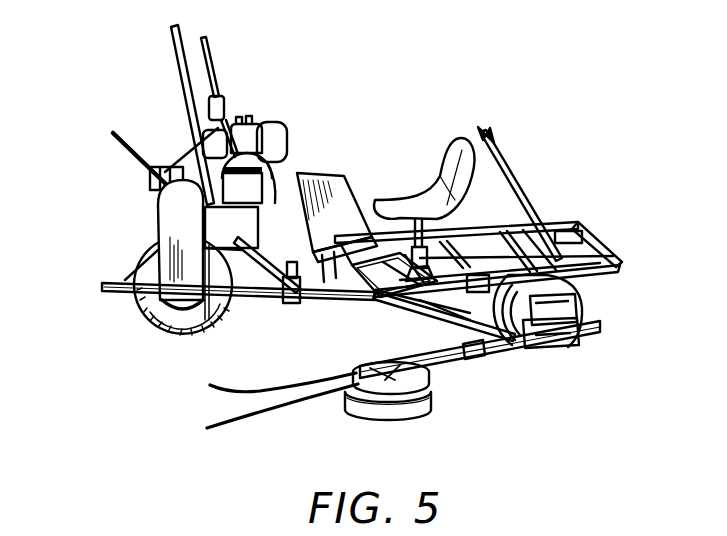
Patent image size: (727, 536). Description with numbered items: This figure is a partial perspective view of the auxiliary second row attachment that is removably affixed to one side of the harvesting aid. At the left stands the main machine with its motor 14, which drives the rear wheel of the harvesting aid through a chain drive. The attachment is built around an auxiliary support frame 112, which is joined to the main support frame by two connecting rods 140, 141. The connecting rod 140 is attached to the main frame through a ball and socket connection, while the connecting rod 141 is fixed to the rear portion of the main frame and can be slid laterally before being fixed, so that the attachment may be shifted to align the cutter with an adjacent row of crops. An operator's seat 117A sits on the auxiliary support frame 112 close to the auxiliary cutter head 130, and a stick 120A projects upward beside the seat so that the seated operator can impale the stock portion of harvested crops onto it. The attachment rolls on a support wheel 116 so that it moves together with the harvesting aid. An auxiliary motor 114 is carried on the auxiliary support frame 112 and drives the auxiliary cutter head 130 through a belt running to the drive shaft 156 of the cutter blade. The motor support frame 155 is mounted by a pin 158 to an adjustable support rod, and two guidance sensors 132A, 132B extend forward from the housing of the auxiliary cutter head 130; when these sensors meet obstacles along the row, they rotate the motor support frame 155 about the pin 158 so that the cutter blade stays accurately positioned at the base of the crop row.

The motor 14 is at (254, 113).
The connecting rod 141 is at (263, 238).
The operator's seat 117A is at (470, 140).
The stick 120A is at (512, 172).
The auxiliary support frame 112 is at (595, 252).
The support wheel 116 is at (580, 287).
The auxiliary motor 114 is at (580, 317).
The connecting rod 140 is at (133, 289).
The guidance sensor 132B is at (243, 386).
The guidance sensor 132A is at (246, 427).
The drive shaft 156 is at (383, 365).
The motor support frame 155 is at (462, 378).
The pin 158 is at (522, 347).
The auxiliary cutter head 130 is at (367, 424).